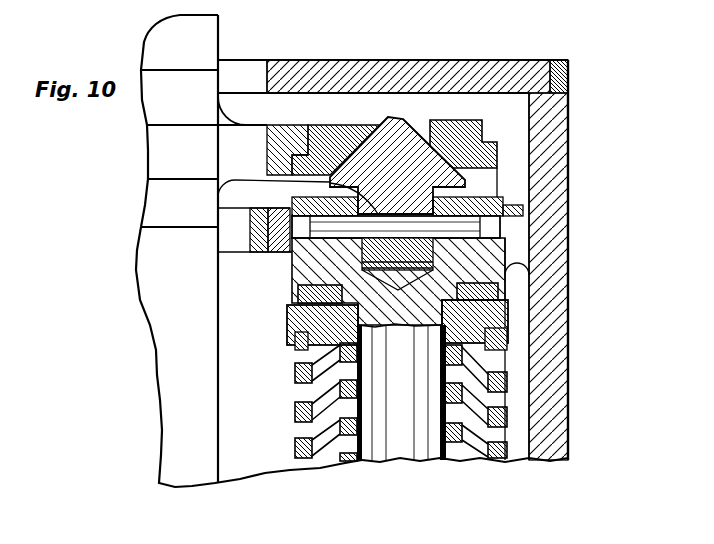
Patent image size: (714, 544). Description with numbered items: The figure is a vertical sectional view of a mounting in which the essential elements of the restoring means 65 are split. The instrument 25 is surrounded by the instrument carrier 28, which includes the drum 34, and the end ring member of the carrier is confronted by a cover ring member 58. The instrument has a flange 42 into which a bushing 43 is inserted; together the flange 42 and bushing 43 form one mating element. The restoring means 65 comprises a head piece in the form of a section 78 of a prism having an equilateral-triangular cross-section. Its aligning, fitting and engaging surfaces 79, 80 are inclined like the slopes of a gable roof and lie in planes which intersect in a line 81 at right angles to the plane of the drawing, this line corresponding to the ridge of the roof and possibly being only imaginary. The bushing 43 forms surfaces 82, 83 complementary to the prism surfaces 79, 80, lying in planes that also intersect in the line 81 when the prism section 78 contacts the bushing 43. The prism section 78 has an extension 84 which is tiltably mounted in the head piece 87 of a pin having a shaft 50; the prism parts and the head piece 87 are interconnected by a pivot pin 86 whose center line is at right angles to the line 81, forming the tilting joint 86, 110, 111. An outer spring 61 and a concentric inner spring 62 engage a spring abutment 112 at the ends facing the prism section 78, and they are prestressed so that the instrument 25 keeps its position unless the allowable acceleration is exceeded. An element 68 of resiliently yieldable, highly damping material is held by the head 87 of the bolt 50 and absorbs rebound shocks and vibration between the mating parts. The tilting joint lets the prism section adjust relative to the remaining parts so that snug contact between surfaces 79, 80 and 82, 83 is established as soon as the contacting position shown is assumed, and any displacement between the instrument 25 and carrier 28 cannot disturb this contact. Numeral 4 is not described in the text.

The valve body 4 is at (374, 117).
The instrument 25 is at (156, 363).
The instrument carrier 28 is at (570, 349).
The drum 34 is at (560, 215).
The flange 42 is at (170, 162).
The bushing 43 is at (323, 130).
The shaft 50 is at (425, 445).
The cover ring member 58 is at (452, 67).
The outer spring 61 is at (505, 385).
The inner spring 62 is at (461, 426).
The restoring means 65 is at (288, 423).
The element of resiliently yieldable material 68 is at (310, 327).
The section of a prism 78 is at (467, 123).
The aligning, fitting and engaging surface 79 is at (363, 122).
The aligning, fitting and engaging surface 80 is at (387, 162).
The line of intersection 81 is at (388, 115).
The complementary surface 82 is at (335, 146).
The complementary surface 83 is at (507, 160).
The extension 84 is at (436, 203).
The pivot pin 86 is at (468, 226).
The head piece 87 is at (485, 265).
The tilting joint part 110 is at (310, 185).
The tilting joint part 111 is at (274, 247).
The spring abutment 112 is at (505, 322).